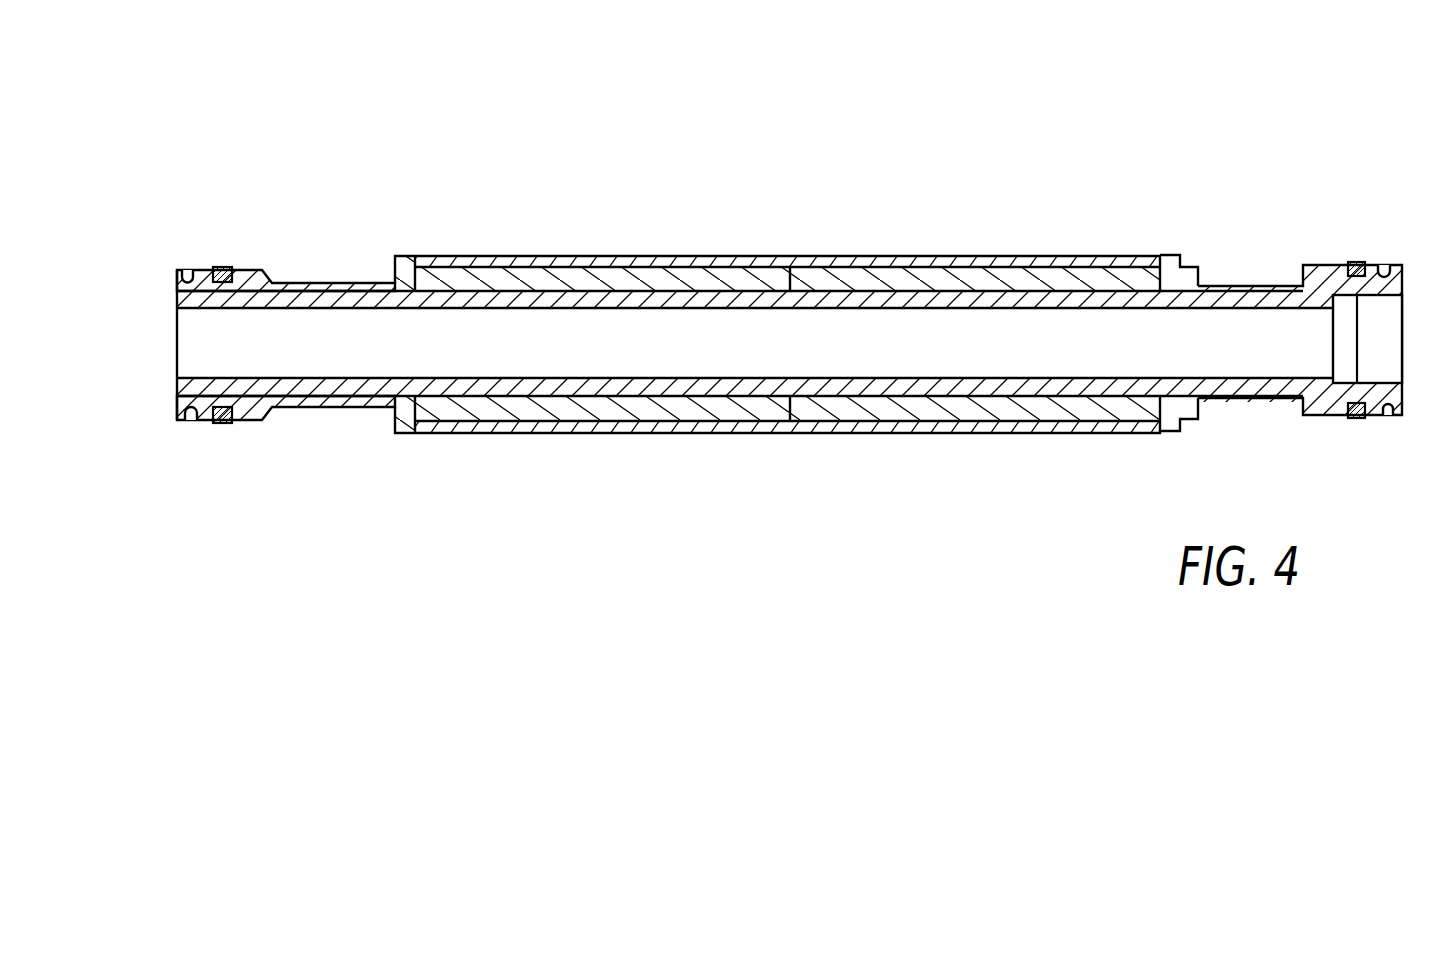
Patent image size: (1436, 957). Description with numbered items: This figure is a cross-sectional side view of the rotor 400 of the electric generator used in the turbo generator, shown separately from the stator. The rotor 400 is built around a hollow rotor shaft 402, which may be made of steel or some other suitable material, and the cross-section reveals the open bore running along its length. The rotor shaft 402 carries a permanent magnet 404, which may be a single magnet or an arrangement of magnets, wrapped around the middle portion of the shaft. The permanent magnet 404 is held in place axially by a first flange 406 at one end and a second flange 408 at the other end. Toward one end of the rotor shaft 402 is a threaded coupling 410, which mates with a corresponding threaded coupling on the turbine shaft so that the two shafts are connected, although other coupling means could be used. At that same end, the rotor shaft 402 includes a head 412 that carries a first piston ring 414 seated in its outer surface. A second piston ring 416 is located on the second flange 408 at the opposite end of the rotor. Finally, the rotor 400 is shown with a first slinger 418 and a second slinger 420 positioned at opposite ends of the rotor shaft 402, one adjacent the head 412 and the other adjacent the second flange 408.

The rotor 400 is at (1032, 114).
The rotor shaft 402 is at (1232, 286).
The permanent magnet 404 is at (812, 256).
The first flange 406 is at (1172, 255).
The second flange 408 is at (293, 283).
The threaded coupling 410 is at (1378, 388).
The head 412 is at (1315, 418).
The first piston ring 414 is at (1356, 262).
The second piston ring 416 is at (221, 265).
The first slinger 418 is at (1395, 418).
The second slinger 420 is at (191, 413).